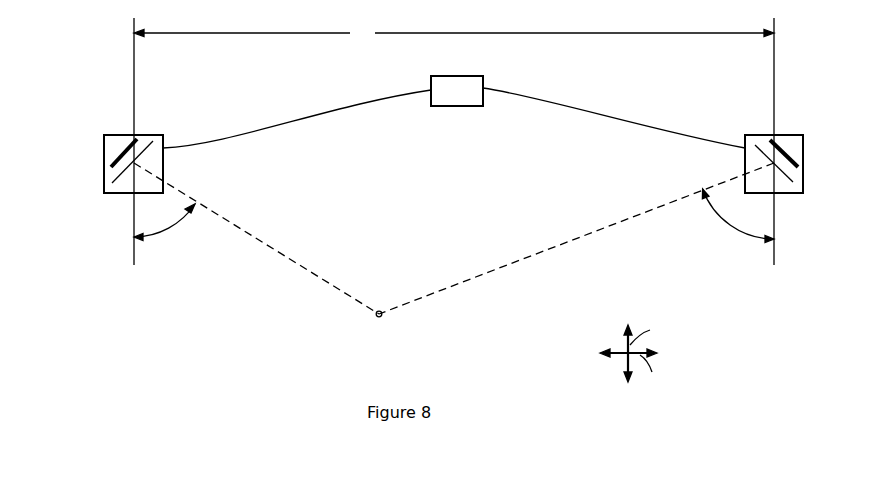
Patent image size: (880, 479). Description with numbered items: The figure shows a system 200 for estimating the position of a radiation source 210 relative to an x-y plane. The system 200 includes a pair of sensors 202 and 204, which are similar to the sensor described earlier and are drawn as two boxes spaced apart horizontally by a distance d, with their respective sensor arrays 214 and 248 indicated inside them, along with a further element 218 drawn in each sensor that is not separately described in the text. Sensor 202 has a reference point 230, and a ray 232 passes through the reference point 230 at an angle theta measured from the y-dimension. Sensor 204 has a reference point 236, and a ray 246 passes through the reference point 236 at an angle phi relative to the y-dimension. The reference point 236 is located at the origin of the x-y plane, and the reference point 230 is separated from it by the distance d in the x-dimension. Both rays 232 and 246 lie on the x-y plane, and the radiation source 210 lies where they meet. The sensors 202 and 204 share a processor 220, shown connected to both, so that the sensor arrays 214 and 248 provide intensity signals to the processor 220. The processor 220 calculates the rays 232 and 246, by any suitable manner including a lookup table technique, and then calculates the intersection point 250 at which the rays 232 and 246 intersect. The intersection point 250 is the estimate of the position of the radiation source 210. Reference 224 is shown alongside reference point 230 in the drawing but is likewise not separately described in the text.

The system 200 is at (170, 299).
The sensor 202 is at (803, 150).
The sensor 204 is at (119, 134).
The radiation source 210 is at (376, 318).
The sensor array 214 is at (786, 135).
The partially reflective surface 218 is at (112, 186).
The processor 220 is at (457, 91).
The second optical path 224 is at (774, 163).
The reference point 230 is at (628, 125).
The ray 232 is at (548, 250).
The reference point 236 is at (134, 163).
The ray 246 is at (271, 252).
The sensor array 248 is at (110, 166).
The intersection point 250 is at (380, 311).